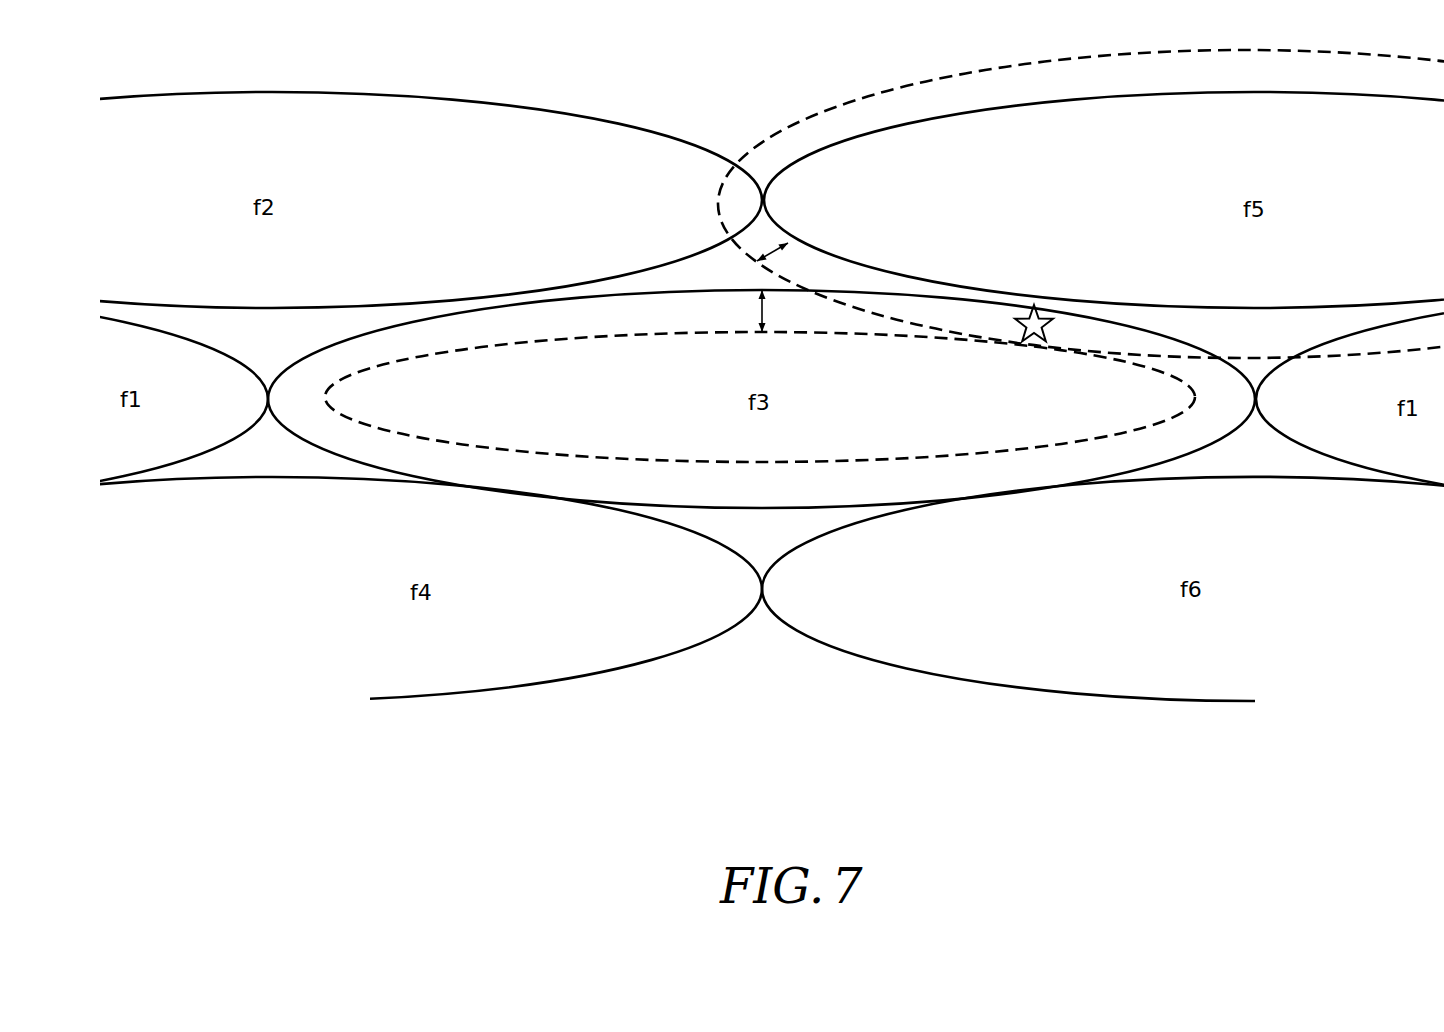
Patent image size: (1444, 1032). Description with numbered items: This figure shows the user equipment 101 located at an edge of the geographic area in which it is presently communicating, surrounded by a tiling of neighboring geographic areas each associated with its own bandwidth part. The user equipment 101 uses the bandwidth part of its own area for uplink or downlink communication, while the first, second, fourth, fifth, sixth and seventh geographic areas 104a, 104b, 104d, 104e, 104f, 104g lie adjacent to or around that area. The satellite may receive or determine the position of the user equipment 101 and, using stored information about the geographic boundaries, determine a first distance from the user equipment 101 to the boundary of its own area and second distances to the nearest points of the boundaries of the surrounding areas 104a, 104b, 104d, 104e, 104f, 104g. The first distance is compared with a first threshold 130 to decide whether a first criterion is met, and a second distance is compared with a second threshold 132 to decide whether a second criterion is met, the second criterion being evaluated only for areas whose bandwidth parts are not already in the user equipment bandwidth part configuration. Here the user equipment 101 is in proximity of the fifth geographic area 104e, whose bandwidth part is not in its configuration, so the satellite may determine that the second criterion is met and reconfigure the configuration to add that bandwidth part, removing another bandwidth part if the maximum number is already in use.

The first geographic area 104a is at (213, 350).
The second geographic area 104b is at (291, 312).
The fourth geographic area 104d is at (620, 667).
The fifth geographic area 104e is at (1000, 110).
The sixth geographic area 104f is at (940, 674).
The seventh geographic area 104g is at (1330, 456).
The user equipment 101 is at (1025, 344).
The first threshold 130 is at (757, 312).
The second threshold 132 is at (772, 257).